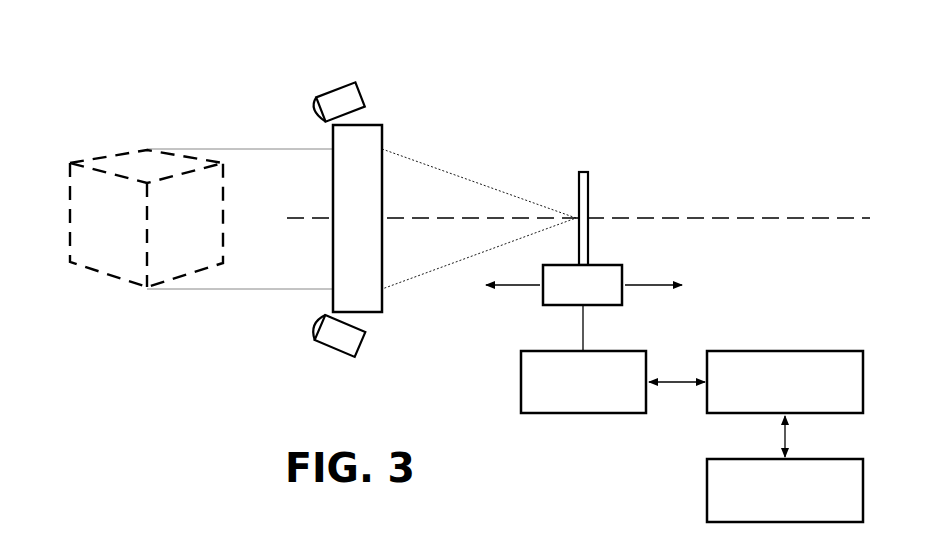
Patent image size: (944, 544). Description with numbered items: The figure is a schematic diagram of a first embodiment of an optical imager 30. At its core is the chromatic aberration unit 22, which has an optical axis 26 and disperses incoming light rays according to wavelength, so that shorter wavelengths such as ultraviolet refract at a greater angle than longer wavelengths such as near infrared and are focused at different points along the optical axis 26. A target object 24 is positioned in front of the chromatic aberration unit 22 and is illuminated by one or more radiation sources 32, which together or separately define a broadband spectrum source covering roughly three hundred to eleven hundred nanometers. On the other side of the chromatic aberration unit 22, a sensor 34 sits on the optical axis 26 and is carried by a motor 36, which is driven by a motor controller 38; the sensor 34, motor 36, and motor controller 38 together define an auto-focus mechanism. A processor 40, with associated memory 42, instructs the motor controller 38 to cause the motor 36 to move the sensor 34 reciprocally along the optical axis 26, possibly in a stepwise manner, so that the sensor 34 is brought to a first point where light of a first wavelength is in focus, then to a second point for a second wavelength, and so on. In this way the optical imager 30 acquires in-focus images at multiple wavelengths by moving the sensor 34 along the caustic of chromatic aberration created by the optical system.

The chromatic aberration unit 22 is at (375, 125).
The target object 24 is at (108, 167).
The optical axis 26 is at (328, 220).
The optical imager 30 is at (758, 124).
The radiation sources 32 is at (333, 85).
The sensor 34 is at (584, 171).
The motor 36 is at (567, 306).
The motor controller 38 is at (520, 382).
The processor 40 is at (778, 350).
The memory 42 is at (707, 500).